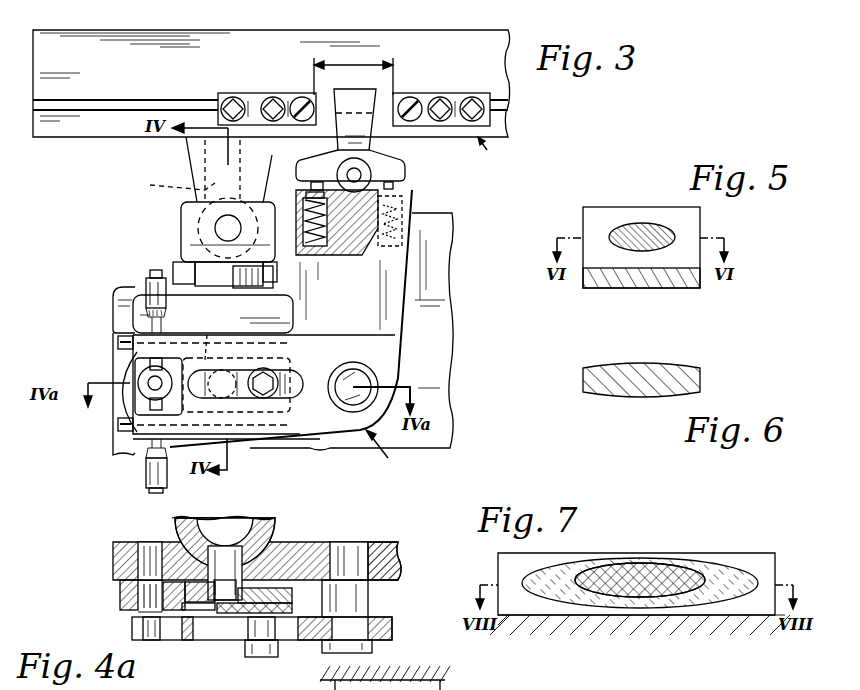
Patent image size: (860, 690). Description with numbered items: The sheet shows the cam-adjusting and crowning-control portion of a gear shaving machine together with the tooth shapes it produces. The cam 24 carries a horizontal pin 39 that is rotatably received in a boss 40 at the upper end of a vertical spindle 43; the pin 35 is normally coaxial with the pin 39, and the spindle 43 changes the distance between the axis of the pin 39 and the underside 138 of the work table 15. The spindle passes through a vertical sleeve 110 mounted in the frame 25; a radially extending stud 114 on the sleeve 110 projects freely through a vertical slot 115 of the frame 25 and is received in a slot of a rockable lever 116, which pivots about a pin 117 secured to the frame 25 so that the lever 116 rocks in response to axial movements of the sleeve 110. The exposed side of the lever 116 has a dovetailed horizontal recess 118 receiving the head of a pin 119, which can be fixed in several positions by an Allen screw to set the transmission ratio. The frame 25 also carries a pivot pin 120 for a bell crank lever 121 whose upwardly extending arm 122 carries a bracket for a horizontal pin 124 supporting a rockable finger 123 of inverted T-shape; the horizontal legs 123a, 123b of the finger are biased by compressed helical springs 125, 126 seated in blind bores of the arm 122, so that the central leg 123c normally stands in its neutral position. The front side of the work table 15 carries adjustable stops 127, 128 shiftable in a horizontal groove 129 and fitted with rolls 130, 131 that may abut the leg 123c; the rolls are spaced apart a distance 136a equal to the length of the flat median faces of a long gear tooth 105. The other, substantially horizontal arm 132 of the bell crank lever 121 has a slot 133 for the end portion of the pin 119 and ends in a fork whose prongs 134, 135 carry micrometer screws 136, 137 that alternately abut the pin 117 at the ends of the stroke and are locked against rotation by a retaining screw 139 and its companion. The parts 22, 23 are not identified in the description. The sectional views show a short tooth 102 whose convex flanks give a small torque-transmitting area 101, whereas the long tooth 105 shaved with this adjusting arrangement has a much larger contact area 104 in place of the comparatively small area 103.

In FIG. 3, the work table 15 is at (500, 98).
In FIG. 4A, the work table 15 is at (428, 678).
In FIG. 3, the support struts 22 is at (192, 159).
In FIG. 3, the support 23 is at (182, 185).
In FIG. 3, the cam 24 is at (180, 270).
In FIG. 3, the frame 25 is at (434, 355).
In FIG. 4A, the frame 25 is at (382, 560).
In FIG. 3, the pin 35 is at (222, 200).
In FIG. 3, the horizontal pin 39 is at (230, 225).
In FIG. 3, the boss 40 is at (184, 220).
In FIG. 3, the spindle 43 is at (240, 288).
In FIG. 4A, the spindle 43 is at (235, 522).
In FIG. 5, the surface area 101 is at (631, 230).
In FIG. 5, the tooth 102 is at (598, 207).
In FIG. 6, the tooth 102 is at (604, 363).
In FIG. 7, the surface area 103 is at (648, 562).
In FIG. 7, the area of contact 104 is at (547, 600).
In FIG. 7, the gear tooth 105 is at (738, 555).
In FIG. 4A, the vertical sleeve 110 is at (262, 523).
In FIG. 3, the stud 114 is at (207, 398).
In FIG. 4A, the stud 114 is at (245, 574).
In FIG. 3, the vertical slot 115 is at (213, 327).
In FIG. 4A, the vertical slot 115 is at (207, 563).
In FIG. 3, the rockable lever 116 is at (131, 378).
In FIG. 4A, the rockable lever 116 is at (130, 597).
In FIG. 4A, the pin 117 is at (162, 640).
In FIG. 4A, the horizontal recess 118 is at (206, 611).
In FIG. 3, the pin 119 is at (276, 372).
In FIG. 4A, the pin 119 is at (263, 658).
In FIG. 3, the pivot pin 120 is at (352, 370).
In FIG. 4A, the pivot pin 120 is at (363, 600).
In FIG. 3, the bell crank lever 121 is at (389, 448).
In FIG. 4A, the bell crank lever 121 is at (392, 634).
In FIG. 3, the upwardly extending arm 122 is at (393, 321).
In FIG. 3, the rockable finger 123 is at (333, 146).
In FIG. 3, the horizontal leg 123a is at (310, 176).
In FIG. 3, the horizontal leg 123b is at (386, 172).
In FIG. 3, the upwardly extending central leg 123c is at (360, 96).
In FIG. 3, the horizontal pin 124 is at (365, 172).
In FIG. 3, the compressed helical spring 125 is at (337, 235).
In FIG. 3, the compressed helical spring 126 is at (397, 218).
In FIG. 3, the adjustable stop 127 is at (248, 97).
In FIG. 3, the adjustable stop 128 is at (477, 97).
In FIG. 3, the horizontal groove 129 is at (130, 100).
In FIG. 3, the roll 130 is at (298, 97).
In FIG. 3, the roll 131 is at (412, 97).
In FIG. 3, the arm 132 is at (332, 433).
In FIG. 4A, the arm 132 is at (328, 653).
In FIG. 3, the slot 133 is at (295, 392).
In FIG. 4A, the slot 133 is at (305, 640).
In FIG. 3, the prong 134 is at (130, 332).
In FIG. 3, the prong 135 is at (118, 430).
In FIG. 3, the micrometer screw 136 is at (148, 284).
In FIG. 3, the distance 136a is at (353, 70).
In FIG. 3, the micrometer screw 137 is at (146, 478).
In FIG. 3, the underside of work table 138 is at (491, 150).
In FIG. 3, the retaining screw 139 is at (118, 341).